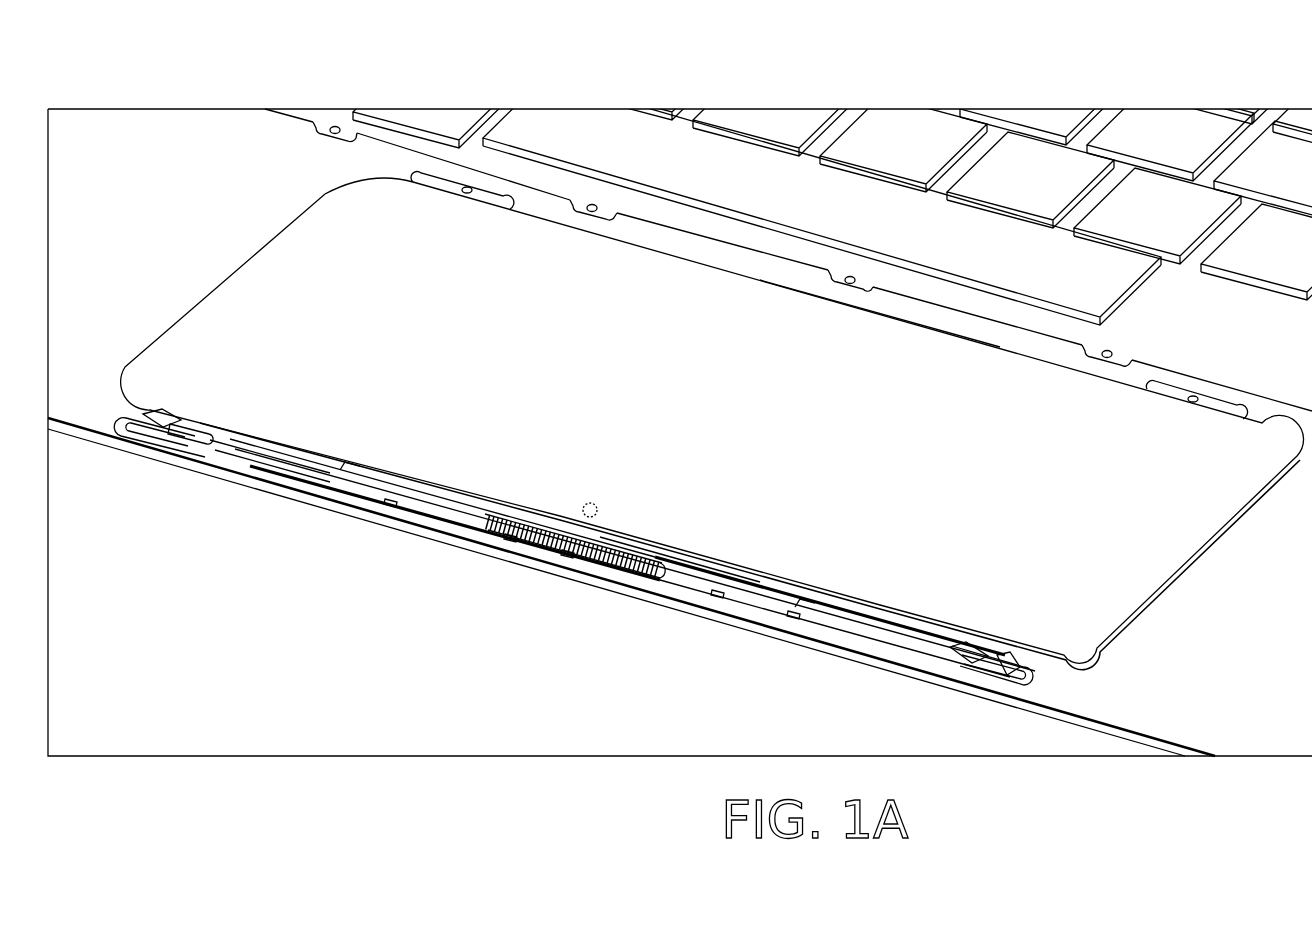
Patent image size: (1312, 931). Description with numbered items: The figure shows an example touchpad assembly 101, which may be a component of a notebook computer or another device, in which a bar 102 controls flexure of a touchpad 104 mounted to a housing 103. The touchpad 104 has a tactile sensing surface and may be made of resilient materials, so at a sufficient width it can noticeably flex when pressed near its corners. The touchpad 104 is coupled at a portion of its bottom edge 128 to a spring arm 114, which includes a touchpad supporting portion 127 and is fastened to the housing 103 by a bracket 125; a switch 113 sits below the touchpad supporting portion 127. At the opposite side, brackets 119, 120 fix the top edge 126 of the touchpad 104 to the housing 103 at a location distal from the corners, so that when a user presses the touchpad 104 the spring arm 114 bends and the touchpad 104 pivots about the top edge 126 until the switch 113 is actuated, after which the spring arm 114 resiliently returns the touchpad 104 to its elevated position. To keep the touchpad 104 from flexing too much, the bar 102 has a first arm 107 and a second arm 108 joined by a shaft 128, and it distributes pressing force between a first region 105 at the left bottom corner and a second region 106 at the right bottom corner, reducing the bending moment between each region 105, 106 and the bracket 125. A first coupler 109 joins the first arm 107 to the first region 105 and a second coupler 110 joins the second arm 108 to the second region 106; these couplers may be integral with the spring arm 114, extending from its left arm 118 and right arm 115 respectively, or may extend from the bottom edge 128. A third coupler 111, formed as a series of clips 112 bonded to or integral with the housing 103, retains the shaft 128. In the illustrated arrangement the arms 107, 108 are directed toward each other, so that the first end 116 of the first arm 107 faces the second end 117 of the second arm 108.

The touchpad assembly 101 is at (676, 74).
The bar 102 is at (268, 490).
The housing 103 is at (167, 234).
The touchpad 104 is at (645, 419).
The first region 105 is at (206, 393).
The second region 106 is at (992, 622).
The first arm 107 is at (120, 412).
The second arm 108 is at (1042, 677).
The first coupler 109 is at (165, 407).
The second coupler 110 is at (1012, 655).
The third coupler 111 is at (830, 650).
The clips 112 is at (352, 470).
The switch 113 is at (592, 500).
The spring arm 114 is at (663, 558).
The right arm 115 is at (730, 565).
The first end 116 is at (220, 436).
The second end 117 is at (944, 649).
The left arm 118 is at (410, 480).
The bracket 119 is at (1176, 402).
The bracket 120 is at (487, 196).
The bracket 125 is at (495, 520).
The top edge 126 is at (834, 314).
The touchpad supporting portion 127 is at (608, 537).
The shaft 128 is at (306, 438).